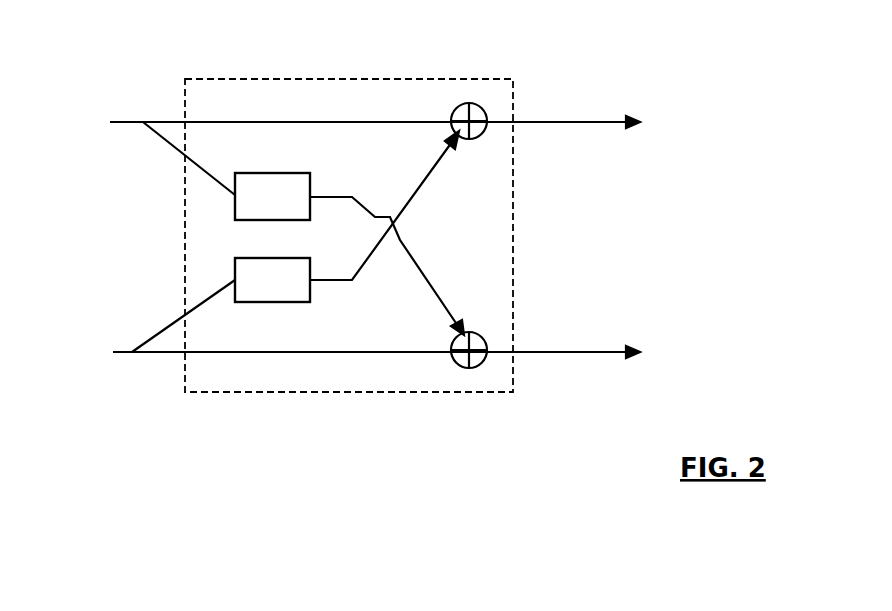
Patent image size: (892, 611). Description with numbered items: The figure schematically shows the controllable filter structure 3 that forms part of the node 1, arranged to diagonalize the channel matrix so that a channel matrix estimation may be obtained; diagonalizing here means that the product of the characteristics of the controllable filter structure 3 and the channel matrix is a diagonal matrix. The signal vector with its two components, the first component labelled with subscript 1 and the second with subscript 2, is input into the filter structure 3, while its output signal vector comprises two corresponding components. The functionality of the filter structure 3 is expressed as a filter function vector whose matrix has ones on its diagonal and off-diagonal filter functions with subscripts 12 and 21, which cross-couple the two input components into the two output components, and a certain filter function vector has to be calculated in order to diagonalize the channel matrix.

The first signal path (y1 to s1) 1 is at (371, 123).
The second signal path (y2 to s2) 2 is at (371, 353).
The controllable filter structure 3 is at (350, 79).
The delay element D21 21 is at (349, 254).
The delay element D12 12 is at (347, 216).